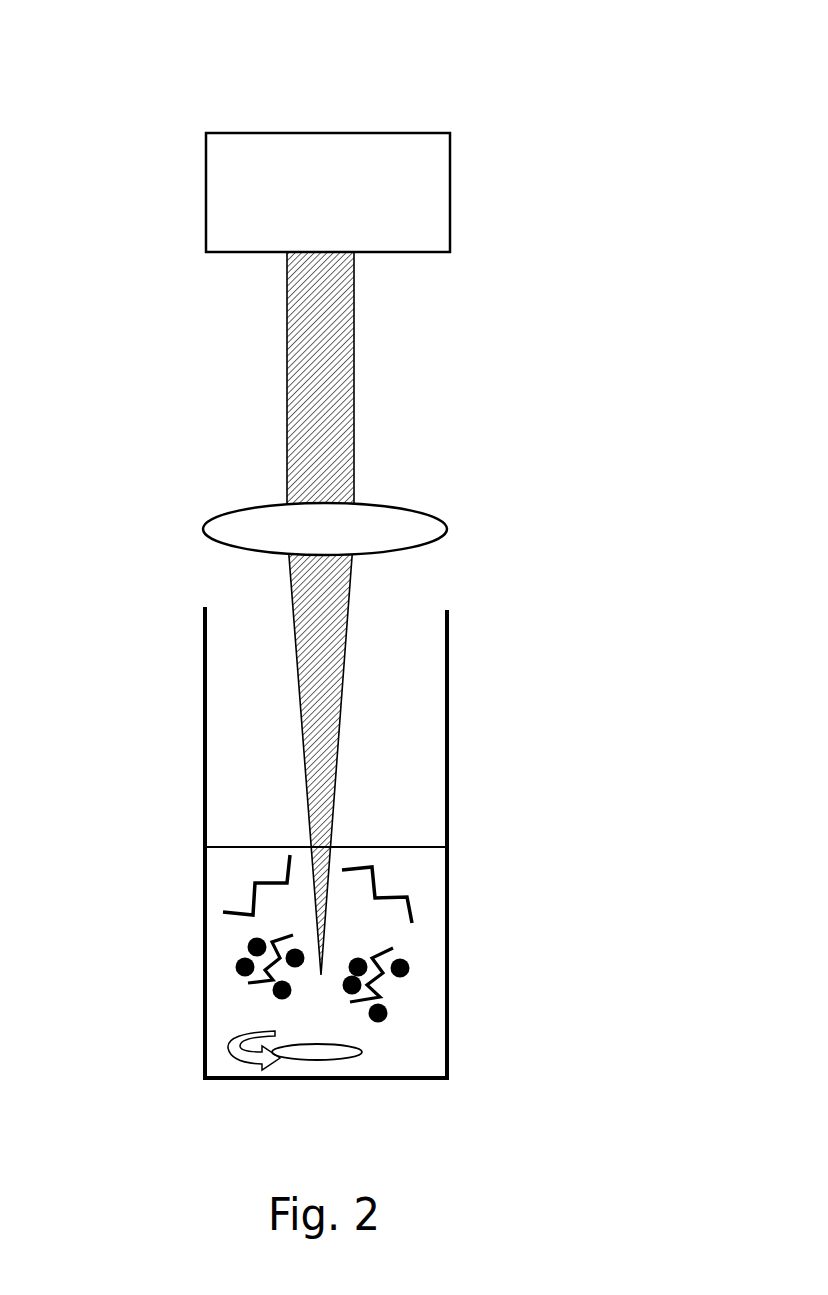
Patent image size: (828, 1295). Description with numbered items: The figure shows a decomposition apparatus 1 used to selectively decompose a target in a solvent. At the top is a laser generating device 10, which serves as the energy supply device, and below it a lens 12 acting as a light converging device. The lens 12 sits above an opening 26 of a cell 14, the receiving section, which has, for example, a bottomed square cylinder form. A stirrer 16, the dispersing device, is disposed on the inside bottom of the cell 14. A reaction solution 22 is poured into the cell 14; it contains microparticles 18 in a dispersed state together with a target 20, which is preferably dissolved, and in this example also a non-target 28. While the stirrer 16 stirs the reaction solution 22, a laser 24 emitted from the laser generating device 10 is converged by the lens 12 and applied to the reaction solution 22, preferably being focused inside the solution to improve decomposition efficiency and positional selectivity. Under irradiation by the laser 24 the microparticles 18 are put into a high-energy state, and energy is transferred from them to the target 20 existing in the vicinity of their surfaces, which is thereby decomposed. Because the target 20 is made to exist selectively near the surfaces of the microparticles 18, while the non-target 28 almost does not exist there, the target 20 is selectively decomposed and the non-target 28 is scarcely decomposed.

The decomposition apparatus 1 is at (385, 101).
The laser generating device 10 is at (450, 192).
The lens 12 is at (447, 527).
The cell 14 is at (447, 793).
The stirrer 16 is at (320, 1053).
The microparticles 18 is at (382, 1008).
The target 20 is at (393, 948).
The reaction solution 22 is at (423, 1045).
The laser 24 is at (285, 405).
The opening 26 is at (252, 617).
The non-target 28 is at (407, 897).